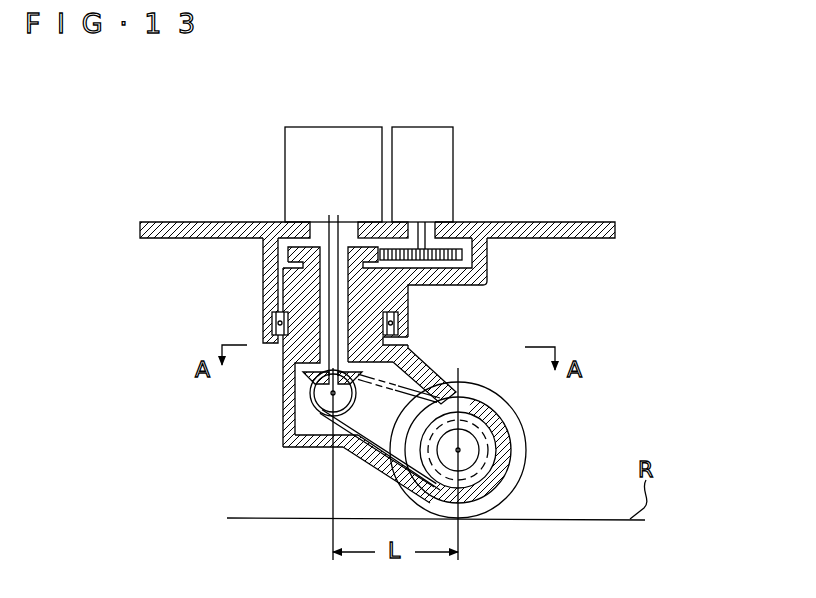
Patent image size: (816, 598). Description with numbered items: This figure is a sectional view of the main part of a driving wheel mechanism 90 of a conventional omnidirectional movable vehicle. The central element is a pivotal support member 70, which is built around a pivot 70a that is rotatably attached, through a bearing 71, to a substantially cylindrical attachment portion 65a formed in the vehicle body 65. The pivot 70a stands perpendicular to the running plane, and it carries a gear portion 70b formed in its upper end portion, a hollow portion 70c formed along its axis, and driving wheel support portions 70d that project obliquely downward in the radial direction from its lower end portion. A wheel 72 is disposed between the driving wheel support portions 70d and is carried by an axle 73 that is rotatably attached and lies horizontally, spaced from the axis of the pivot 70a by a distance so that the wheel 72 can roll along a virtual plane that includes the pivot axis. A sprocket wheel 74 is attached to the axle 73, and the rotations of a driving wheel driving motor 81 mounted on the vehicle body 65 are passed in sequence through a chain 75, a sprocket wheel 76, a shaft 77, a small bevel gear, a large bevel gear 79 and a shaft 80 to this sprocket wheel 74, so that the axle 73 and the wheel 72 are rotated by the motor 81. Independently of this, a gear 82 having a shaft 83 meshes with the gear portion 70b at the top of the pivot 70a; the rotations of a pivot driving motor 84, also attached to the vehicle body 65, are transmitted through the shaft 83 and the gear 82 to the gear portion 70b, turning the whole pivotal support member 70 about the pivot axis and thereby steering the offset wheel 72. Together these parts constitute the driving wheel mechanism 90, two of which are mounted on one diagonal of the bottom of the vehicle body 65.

The driving wheel mechanism 90 is at (228, 200).
The driving wheel driving motor 81 is at (330, 130).
The pivot driving motor 84 is at (432, 130).
The shaft 80 is at (325, 236).
The shaft 83 is at (431, 221).
The vehicle body 65 is at (569, 224).
The attachment portion 65a is at (262, 340).
The gear 82 is at (463, 256).
The pivotal support member 70 is at (285, 291).
The pivot 70a is at (372, 302).
The gear portion 70b is at (288, 253).
The hollow portion 70c is at (345, 334).
The driving wheel support portion 70d is at (378, 443).
The bearing 71 is at (272, 322).
The chain 75 is at (417, 373).
The sprocket wheel 76 is at (314, 404).
The shaft 77 is at (318, 448).
The large bevel gear 79 is at (310, 384).
The wheel 72 is at (523, 448).
The axle 73 is at (478, 442).
The sprocket wheel 74 is at (522, 473).